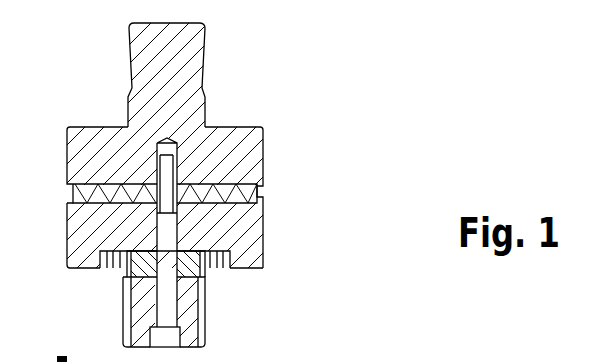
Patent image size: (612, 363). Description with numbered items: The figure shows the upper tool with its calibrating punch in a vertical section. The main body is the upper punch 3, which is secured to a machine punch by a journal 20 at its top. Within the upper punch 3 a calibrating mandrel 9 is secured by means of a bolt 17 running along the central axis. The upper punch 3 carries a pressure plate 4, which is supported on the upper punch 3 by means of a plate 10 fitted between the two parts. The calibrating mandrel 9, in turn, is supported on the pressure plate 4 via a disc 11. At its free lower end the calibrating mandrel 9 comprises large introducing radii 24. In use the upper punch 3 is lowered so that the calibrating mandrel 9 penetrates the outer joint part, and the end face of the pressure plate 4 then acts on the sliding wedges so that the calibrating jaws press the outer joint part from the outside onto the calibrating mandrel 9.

The journal 20 is at (180, 48).
The upper punch 3 is at (255, 142).
The bolt 17 is at (165, 167).
The plate 10 is at (245, 193).
The pressure plate 4 is at (243, 220).
The disc 11 is at (183, 271).
The calibrating mandrel 9 is at (193, 312).
The introducing radii 24 is at (200, 345).